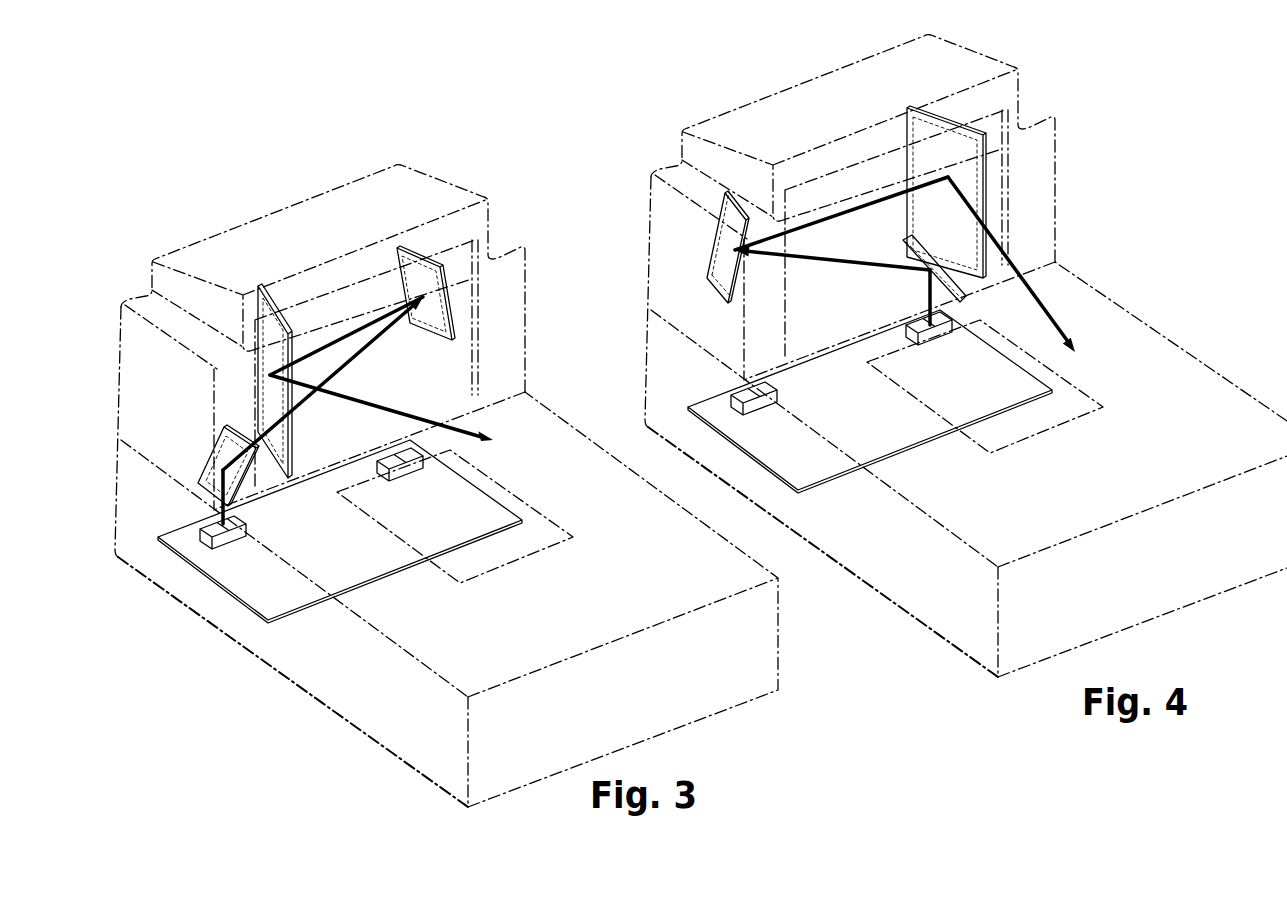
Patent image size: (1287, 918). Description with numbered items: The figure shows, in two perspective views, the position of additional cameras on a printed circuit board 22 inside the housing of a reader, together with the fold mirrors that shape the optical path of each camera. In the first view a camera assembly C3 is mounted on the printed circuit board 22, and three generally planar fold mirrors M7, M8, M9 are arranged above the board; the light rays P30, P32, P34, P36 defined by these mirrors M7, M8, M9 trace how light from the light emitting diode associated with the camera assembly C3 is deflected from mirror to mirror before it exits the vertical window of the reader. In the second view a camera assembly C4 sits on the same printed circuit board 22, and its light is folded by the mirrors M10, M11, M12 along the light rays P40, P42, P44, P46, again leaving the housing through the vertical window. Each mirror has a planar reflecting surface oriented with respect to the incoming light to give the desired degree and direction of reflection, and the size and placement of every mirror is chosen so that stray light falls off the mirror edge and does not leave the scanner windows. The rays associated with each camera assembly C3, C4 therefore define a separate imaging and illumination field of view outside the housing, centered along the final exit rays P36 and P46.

In FIG. 3, the printed circuit board 22 is at (393, 556).
In FIG. 4, the printed circuit board 22 is at (815, 456).
In FIG. 3, the camera assembly C3 is at (225, 527).
In FIG. 4, the camera assembly C3 is at (747, 398).
In FIG. 3, the camera assembly C4 is at (404, 470).
In FIG. 4, the camera assembly C4 is at (935, 335).
In FIG. 3, the fold mirror M7 is at (222, 455).
In FIG. 3, the fold mirror M8 is at (270, 375).
In FIG. 3, the fold mirror M9 is at (430, 283).
In FIG. 4, the fold mirror M10 is at (730, 237).
In FIG. 4, the fold mirror M11 is at (950, 296).
In FIG. 4, the fold mirror M12 is at (967, 167).
In FIG. 3, the light ray P30 is at (222, 484).
In FIG. 3, the light ray P32 is at (299, 410).
In FIG. 3, the light ray P34 is at (338, 362).
In FIG. 3, the light ray P36 is at (381, 409).
In FIG. 4, the light ray P40 is at (930, 290).
In FIG. 4, the light ray P42 is at (830, 262).
In FIG. 4, the light ray P44 is at (845, 205).
In FIG. 4, the light ray P46 is at (1037, 296).